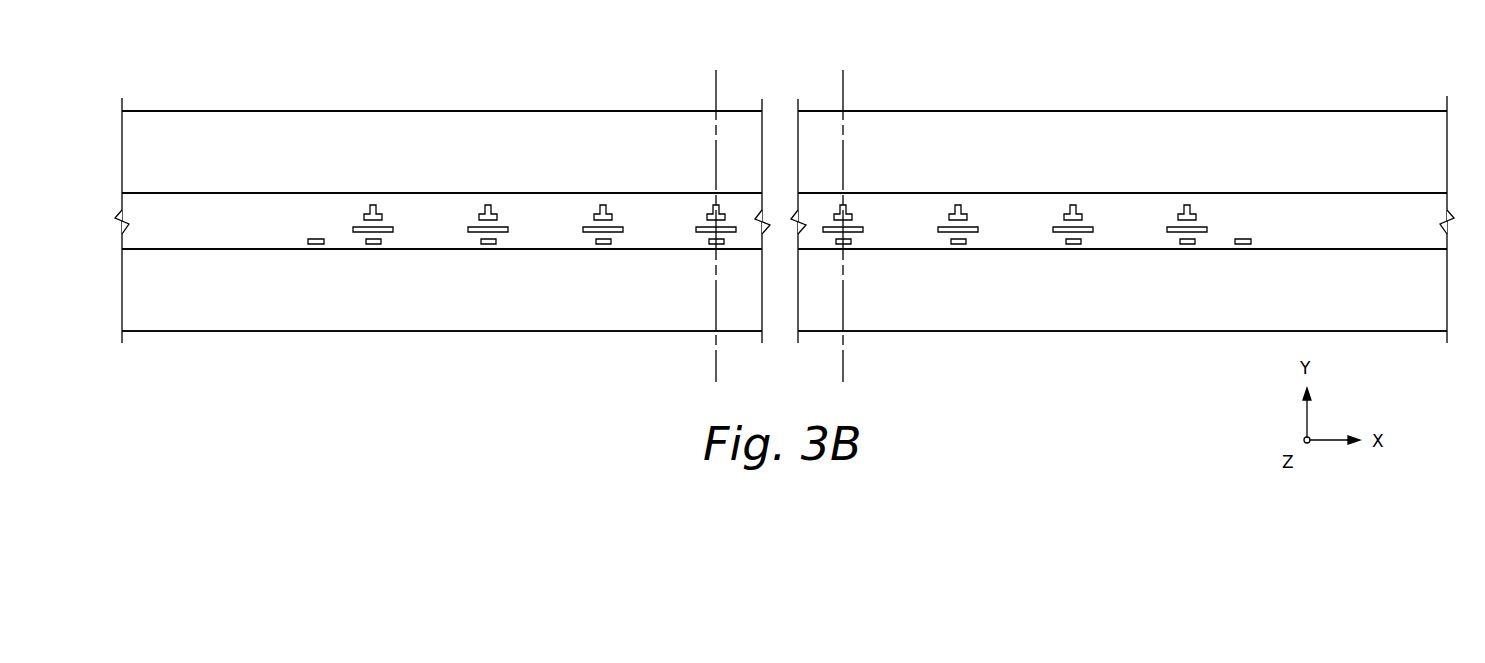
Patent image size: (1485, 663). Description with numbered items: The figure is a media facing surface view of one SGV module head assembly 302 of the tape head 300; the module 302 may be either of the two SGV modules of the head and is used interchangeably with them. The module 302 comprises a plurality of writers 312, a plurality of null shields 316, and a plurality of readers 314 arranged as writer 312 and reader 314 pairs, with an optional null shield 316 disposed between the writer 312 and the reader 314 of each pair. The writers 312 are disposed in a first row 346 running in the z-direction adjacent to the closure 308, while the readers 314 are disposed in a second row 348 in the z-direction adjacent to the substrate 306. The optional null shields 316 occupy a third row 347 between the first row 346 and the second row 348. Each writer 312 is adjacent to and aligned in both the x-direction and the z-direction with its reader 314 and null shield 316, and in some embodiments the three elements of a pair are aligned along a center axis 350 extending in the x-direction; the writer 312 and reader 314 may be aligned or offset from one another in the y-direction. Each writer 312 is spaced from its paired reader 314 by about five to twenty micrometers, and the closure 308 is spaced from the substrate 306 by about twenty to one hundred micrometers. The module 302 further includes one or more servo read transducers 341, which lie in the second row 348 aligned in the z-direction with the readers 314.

The tape head 300 is at (255, 58).
The SGV module head assembly 302 is at (375, 93).
The substrate 306 is at (1092, 319).
The closure 308 is at (1092, 148).
The writer 312 is at (371, 206).
The reader 314 is at (364, 244).
The null shield 316 is at (356, 228).
The servo read transducer 341 is at (308, 241).
The first row 346 is at (1296, 208).
The third row 347 is at (268, 221).
The second row 348 is at (1296, 236).
The center axis 350 is at (716, 84).